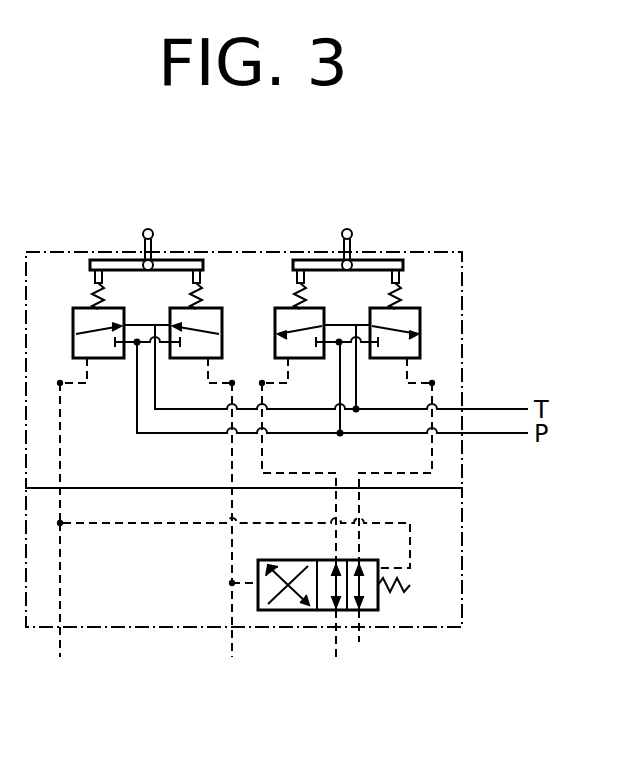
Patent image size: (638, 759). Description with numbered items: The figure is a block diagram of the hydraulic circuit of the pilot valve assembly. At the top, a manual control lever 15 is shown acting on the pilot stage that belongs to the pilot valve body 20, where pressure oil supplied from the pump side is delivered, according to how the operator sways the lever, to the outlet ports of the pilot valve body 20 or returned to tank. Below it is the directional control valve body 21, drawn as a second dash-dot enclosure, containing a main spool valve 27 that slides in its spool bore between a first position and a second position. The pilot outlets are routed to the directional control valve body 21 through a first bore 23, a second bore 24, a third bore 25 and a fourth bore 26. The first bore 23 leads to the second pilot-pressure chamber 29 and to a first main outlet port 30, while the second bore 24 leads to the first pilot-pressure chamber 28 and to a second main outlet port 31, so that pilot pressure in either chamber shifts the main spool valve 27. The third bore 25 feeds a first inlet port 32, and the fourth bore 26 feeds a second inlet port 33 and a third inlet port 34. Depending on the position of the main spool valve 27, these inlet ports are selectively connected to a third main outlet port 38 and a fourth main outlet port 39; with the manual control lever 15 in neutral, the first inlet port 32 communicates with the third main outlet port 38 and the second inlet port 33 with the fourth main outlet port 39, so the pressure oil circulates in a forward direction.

The manual control lever 15 is at (153, 233).
The pilot valve body 20 is at (463, 357).
The directional control valve body 21 is at (463, 545).
The first bore 23 is at (232, 566).
The second bore 24 is at (60, 540).
The third bore 25 is at (336, 512).
The fourth bore 26 is at (359, 512).
The main spool valve 27 is at (281, 560).
The first pilot-pressure chamber 28 is at (380, 566).
The second pilot-pressure chamber 29 is at (258, 585).
The first main outlet port 30 is at (60, 627).
The second main outlet port 31 is at (222, 333).
The first inlet port 32 is at (76, 333).
The second inlet port 33 is at (278, 333).
The third inlet port 34 is at (418, 333).
The third main outlet port 38 is at (332, 631).
The fourth main outlet port 39 is at (365, 628).